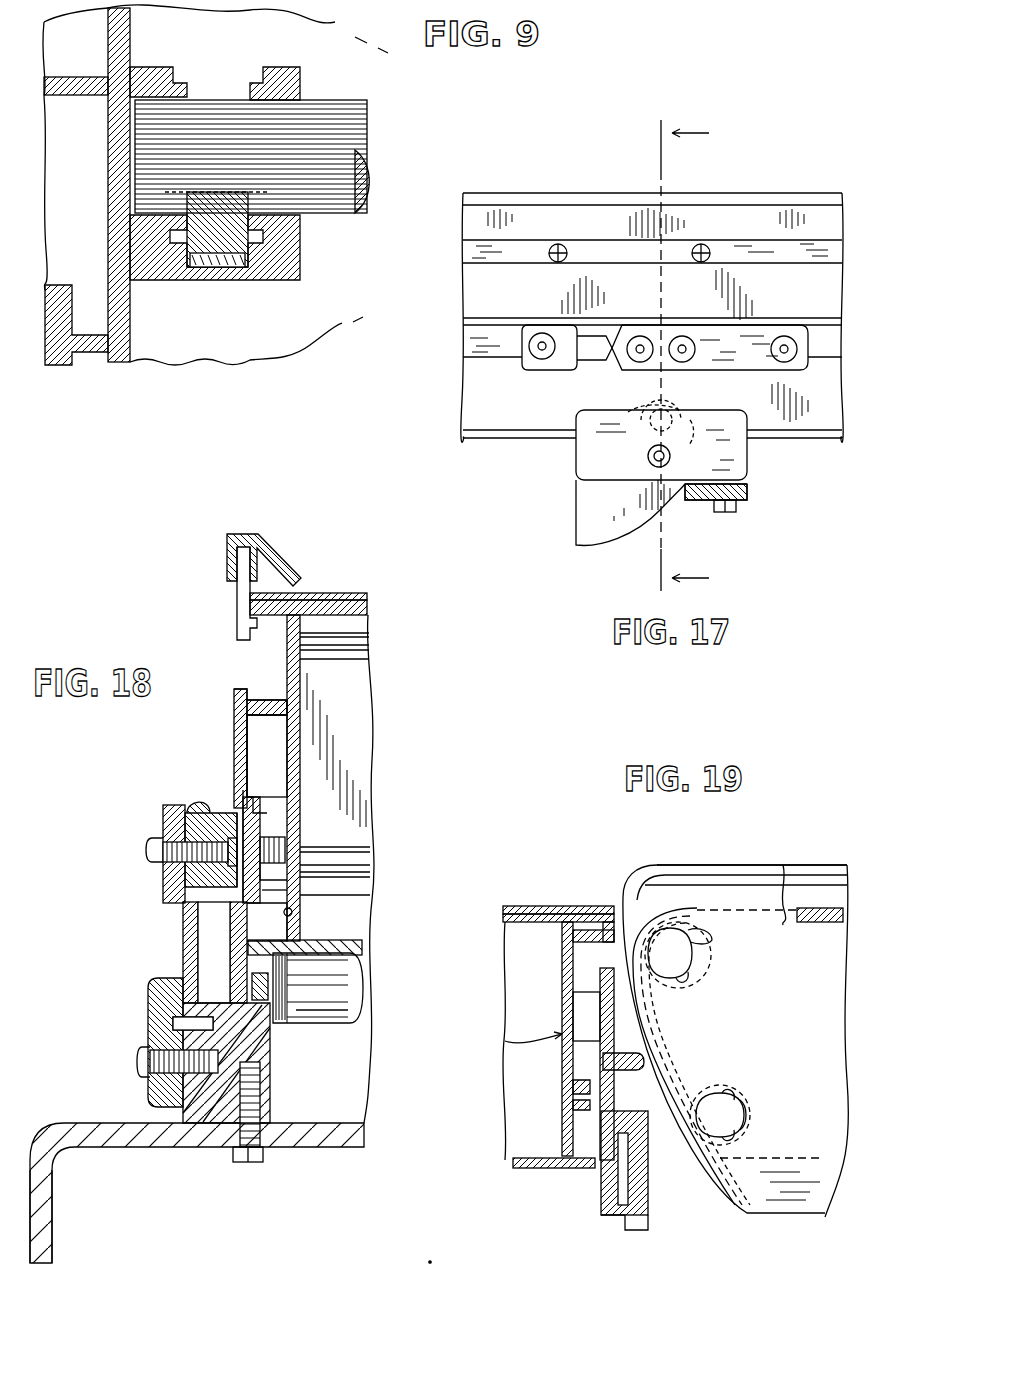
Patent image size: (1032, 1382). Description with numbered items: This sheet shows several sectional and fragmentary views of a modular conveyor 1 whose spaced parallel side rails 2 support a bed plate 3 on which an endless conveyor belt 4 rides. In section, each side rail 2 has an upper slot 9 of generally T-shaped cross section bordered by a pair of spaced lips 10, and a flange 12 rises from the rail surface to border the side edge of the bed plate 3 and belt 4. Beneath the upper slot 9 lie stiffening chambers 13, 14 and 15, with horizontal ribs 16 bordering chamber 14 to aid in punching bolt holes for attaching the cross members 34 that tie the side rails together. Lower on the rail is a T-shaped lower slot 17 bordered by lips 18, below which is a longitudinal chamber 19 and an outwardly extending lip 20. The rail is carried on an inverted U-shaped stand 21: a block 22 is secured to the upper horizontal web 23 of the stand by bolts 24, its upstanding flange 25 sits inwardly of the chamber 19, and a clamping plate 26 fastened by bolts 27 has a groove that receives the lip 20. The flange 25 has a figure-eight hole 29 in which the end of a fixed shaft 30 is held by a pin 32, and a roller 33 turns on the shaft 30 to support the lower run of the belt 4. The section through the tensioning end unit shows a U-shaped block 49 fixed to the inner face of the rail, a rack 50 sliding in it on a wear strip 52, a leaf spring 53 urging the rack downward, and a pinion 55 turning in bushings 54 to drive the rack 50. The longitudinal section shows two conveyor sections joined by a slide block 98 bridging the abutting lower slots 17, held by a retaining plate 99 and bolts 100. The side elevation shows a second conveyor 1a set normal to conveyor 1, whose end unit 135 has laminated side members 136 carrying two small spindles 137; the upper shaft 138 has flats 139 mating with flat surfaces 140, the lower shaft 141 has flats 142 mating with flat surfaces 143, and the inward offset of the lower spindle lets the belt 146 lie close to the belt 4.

In FIG. 19, the conveyor 1 is at (533, 889).
In FIG. 19, the conveyor 1a is at (804, 863).
In FIG. 9, the side rail 2 is at (132, 340).
In FIG. 17, the side rail 2 is at (581, 186).
In FIG. 19, the side rail 2 is at (505, 1041).
In FIG. 18, the bed plate 3 is at (358, 612).
In FIG. 19, the bed plate 3 is at (512, 925).
In FIG. 18, the conveyor belt 4 is at (355, 595).
In FIG. 19, the conveyor belt 4 is at (544, 908).
In FIG. 9, the upper slot 9 is at (63, 62).
In FIG. 17, the upper slot 9 is at (835, 252).
In FIG. 18, the upper slot 9 is at (265, 681).
In FIG. 19, the upper slot 9 is at (578, 958).
In FIG. 18, the lips 10 is at (238, 640).
In FIG. 18, the flange 12 is at (238, 593).
In FIG. 9, the chamber 13 is at (62, 277).
In FIG. 18, the chamber 13 is at (281, 757).
In FIG. 18, the chamber 14 is at (283, 840).
In FIG. 18, the chamber 15 is at (290, 915).
In FIG. 18, the horizontal ribs 16 is at (273, 827).
In FIG. 9, the lower slot 17 is at (47, 320).
In FIG. 17, the lower slot 17 is at (683, 345).
In FIG. 18, the lower slot 17 is at (205, 812).
In FIG. 19, the lower slot 17 is at (600, 1094).
In FIG. 17, the lips 18 is at (670, 355).
In FIG. 18, the lips 18 is at (180, 835).
In FIG. 18, the longitudinal chamber 19 is at (200, 960).
In FIG. 18, the lip 20 is at (176, 1023).
In FIG. 19, the lip 20 is at (648, 1222).
In FIG. 17, the stand 21 is at (580, 513).
In FIG. 18, the stand 21 is at (45, 1210).
In FIG. 18, the block 22 is at (208, 1123).
In FIG. 18, the upper horizontal web 23 is at (92, 1130).
In FIG. 18, the bolts 24 is at (268, 1160).
In FIG. 18, the upstanding flange 25 is at (264, 1032).
In FIG. 17, the clamping plate 26 is at (576, 451).
In FIG. 18, the clamping plate 26 is at (157, 996).
In FIG. 17, the bolts 27 is at (671, 456).
In FIG. 18, the bolts 27 is at (142, 1064).
In FIG. 18, the hole 29 is at (263, 1007).
In FIG. 18, the shaft 30 is at (300, 1010).
In FIG. 18, the pins 32 is at (281, 985).
In FIG. 18, the roller 33 is at (350, 990).
In FIG. 18, the cross member 34 is at (362, 690).
In FIG. 9, the block 49 is at (300, 265).
In FIG. 9, the rack 50 is at (206, 248).
In FIG. 9, the wear strip 52 is at (230, 263).
In FIG. 9, the leaf spring 53 is at (218, 190).
In FIG. 9, the bushings 54 is at (143, 90).
In FIG. 9, the pinion 55 is at (358, 143).
In FIG. 17, the slide block 98 is at (594, 356).
In FIG. 18, the slide block 98 is at (210, 874).
In FIG. 17, the retaining plate 99 is at (712, 365).
In FIG. 18, the retaining plate 99 is at (160, 845).
In FIG. 17, the bolts 100 is at (685, 336).
In FIG. 19, the end unit 135 is at (834, 864).
In FIG. 19, the side members 136 is at (810, 1018).
In FIG. 19, the spindles 137 is at (660, 1026).
In FIG. 19, the shaft 138 is at (678, 955).
In FIG. 19, the flats 139 is at (683, 925).
In FIG. 19, the flat surfaces 140 is at (713, 937).
In FIG. 19, the shaft 141 is at (720, 1115).
In FIG. 19, the flats 142 is at (728, 1090).
In FIG. 19, the flat surfaces 143 is at (748, 1104).
In FIG. 19, the belt 146 is at (834, 914).